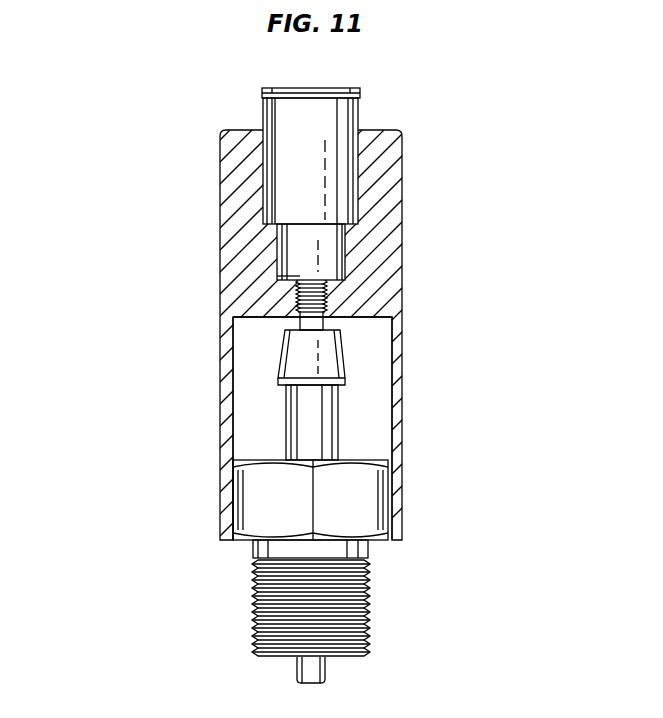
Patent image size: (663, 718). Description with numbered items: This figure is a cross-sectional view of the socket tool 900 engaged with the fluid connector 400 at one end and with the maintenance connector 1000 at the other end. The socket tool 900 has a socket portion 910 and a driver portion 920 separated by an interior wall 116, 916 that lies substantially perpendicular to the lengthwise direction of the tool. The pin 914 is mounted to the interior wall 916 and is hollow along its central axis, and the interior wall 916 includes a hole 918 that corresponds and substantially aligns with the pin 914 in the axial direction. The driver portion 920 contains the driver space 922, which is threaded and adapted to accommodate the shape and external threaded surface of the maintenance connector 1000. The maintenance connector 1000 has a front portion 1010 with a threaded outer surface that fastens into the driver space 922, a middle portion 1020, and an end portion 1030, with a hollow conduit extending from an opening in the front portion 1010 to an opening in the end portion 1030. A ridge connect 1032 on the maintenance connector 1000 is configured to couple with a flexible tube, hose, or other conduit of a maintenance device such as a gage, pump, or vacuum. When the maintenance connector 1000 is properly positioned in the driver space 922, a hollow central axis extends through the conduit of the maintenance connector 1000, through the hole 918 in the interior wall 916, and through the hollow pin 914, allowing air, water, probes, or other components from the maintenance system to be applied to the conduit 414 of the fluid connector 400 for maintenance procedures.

The socket tool 900 is at (331, 335).
The driver portion 920 is at (123, 132).
The socket portion 910 is at (125, 322).
The interior wall 916 is at (228, 387).
The hole 918 is at (290, 272).
The interior wall 116 is at (370, 318).
The maintenance connector 1000 is at (330, 193).
The end portion 1030 is at (340, 149).
The ridge connect 1032 is at (262, 97).
The driver space 922 is at (337, 165).
The middle portion 1020 is at (330, 273).
The front portion 1010 is at (438, 275).
The conduit 414 is at (292, 329).
The fluid connector 400 is at (365, 522).
The pin 914 is at (327, 675).